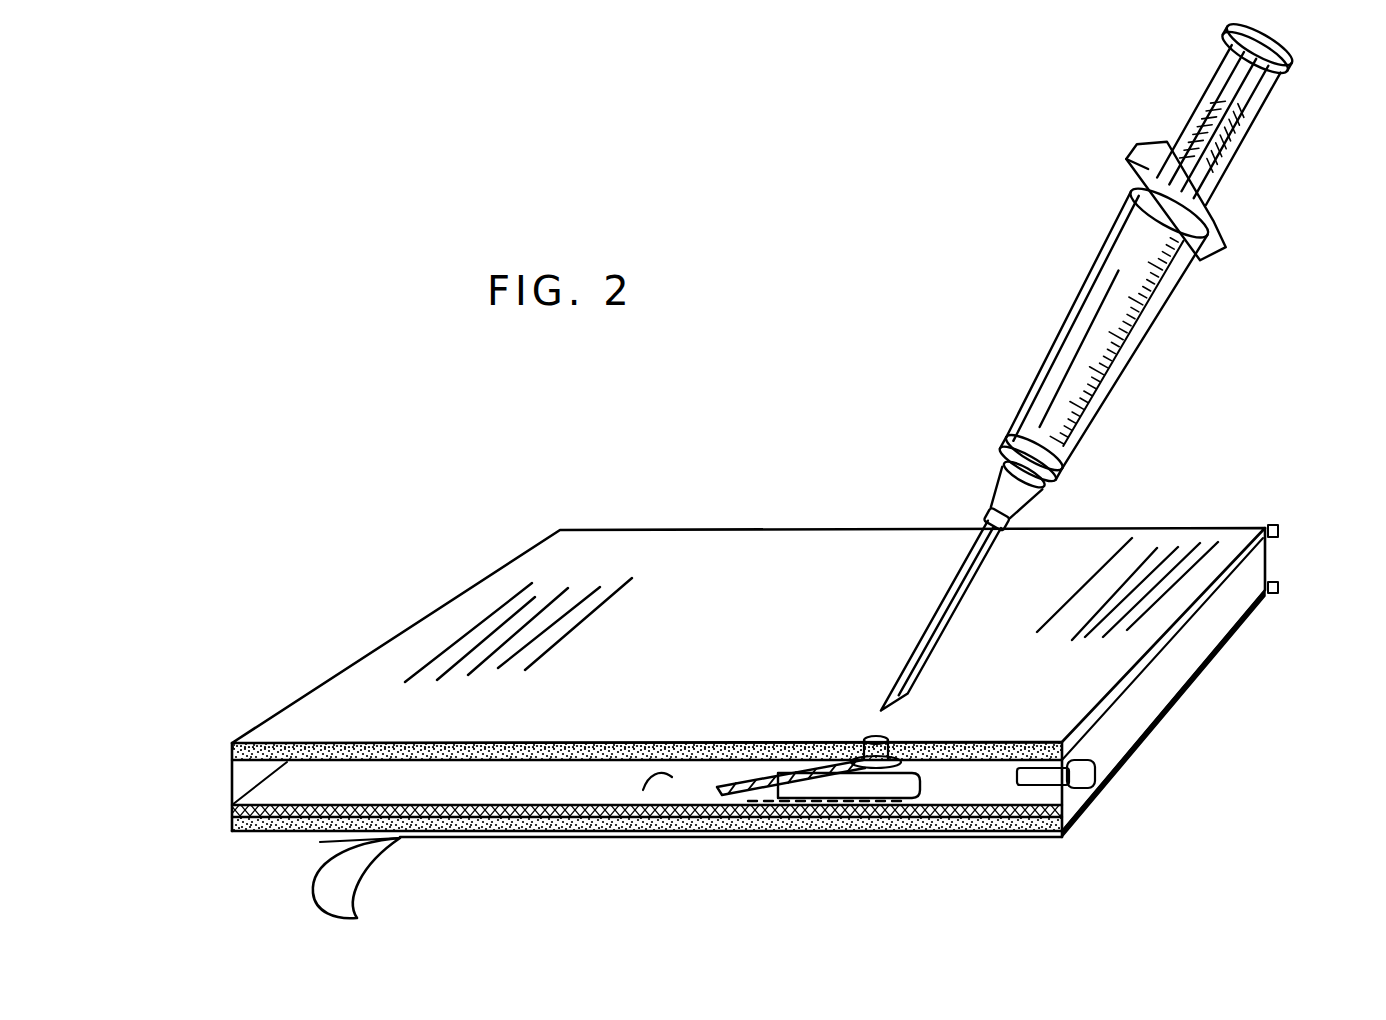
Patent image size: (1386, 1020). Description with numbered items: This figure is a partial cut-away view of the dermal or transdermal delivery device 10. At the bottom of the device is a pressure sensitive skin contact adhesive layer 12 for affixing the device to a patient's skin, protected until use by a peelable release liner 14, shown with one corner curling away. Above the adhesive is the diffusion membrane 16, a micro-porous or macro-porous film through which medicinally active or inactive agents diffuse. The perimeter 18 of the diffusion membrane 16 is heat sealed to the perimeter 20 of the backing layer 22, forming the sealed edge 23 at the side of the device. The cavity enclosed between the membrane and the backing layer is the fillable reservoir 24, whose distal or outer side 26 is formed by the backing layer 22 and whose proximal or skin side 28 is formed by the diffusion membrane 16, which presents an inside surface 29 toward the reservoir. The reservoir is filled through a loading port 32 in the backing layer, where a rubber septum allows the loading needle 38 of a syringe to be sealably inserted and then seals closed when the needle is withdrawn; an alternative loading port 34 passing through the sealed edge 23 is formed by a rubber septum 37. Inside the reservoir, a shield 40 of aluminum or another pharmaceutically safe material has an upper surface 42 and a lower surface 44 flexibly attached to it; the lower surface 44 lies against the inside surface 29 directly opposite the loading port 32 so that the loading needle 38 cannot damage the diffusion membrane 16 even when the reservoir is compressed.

The dermal or transdermal delivery device 10 is at (440, 568).
The pressure sensitive skin contact adhesive layer 12 is at (280, 833).
The release liner 14 is at (357, 900).
The diffusion membrane 16 is at (622, 833).
The perimeter of diffusion membrane 18 is at (232, 812).
The perimeter of backing layer 20 is at (230, 742).
The backing layer 22 is at (697, 568).
The sealed edge 23 is at (230, 785).
The fillable reservoir 24 is at (568, 782).
The distal or outer side 26 is at (1278, 531).
The proximal or skin side 28 is at (1278, 588).
The inside surface 29 is at (672, 777).
The loading port 32 is at (904, 719).
The loading port 34 is at (1102, 797).
The rubber septum 37 is at (1095, 775).
The loading needle 38 is at (948, 597).
The shield 40 is at (908, 782).
The upper surface 42 is at (778, 800).
The lower surface 44 is at (853, 818).